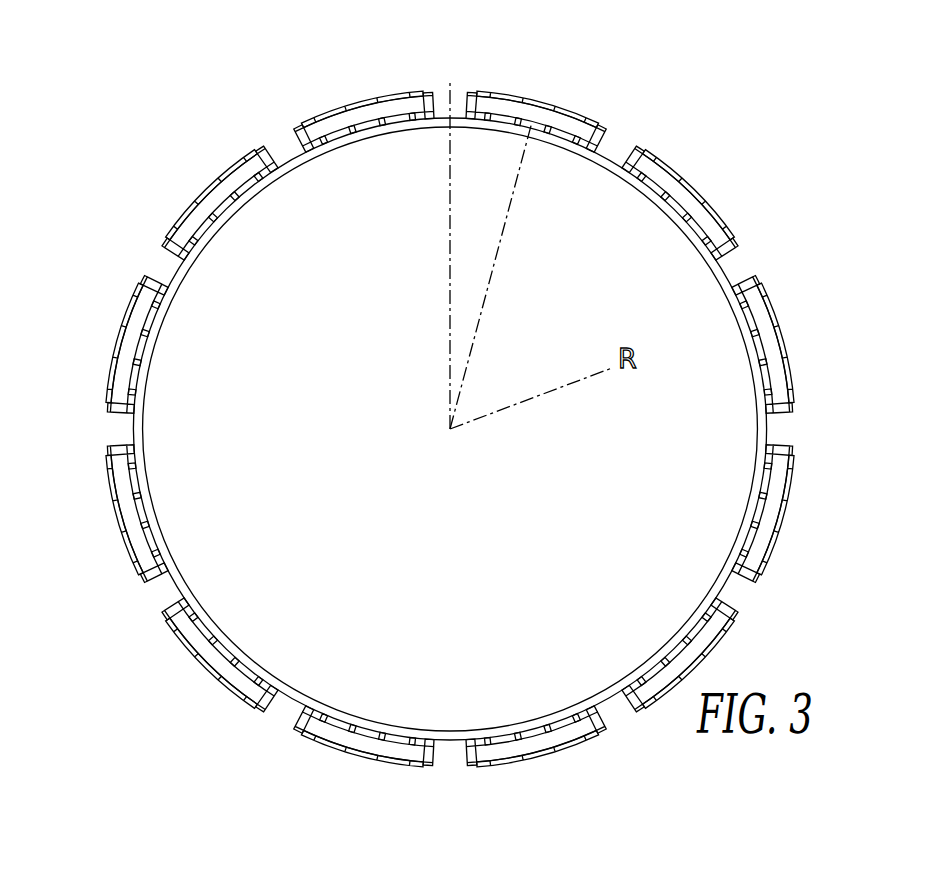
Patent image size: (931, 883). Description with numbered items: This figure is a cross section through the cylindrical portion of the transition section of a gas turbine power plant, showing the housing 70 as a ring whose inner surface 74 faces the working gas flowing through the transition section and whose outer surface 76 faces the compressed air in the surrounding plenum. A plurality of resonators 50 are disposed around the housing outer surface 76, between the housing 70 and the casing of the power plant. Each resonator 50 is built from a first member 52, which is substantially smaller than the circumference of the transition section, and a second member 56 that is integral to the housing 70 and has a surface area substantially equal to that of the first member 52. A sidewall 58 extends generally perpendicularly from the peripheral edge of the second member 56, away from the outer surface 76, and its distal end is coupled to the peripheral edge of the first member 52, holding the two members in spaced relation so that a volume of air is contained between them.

The resonator 50 is at (323, 110).
The first member 52 is at (405, 97).
The second member 56 is at (381, 125).
The sidewall 58 is at (438, 110).
The housing 70 is at (170, 268).
The inner surface 74 is at (143, 412).
The outer surface 76 is at (126, 426).